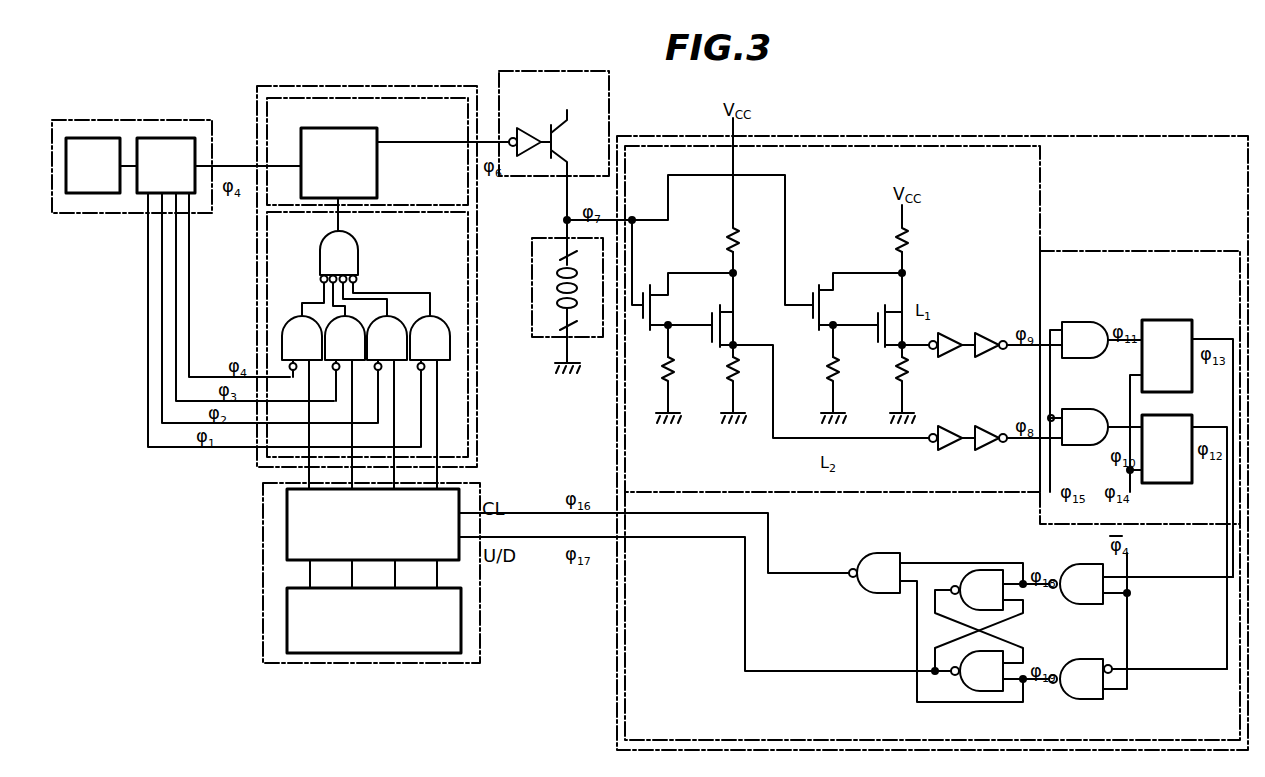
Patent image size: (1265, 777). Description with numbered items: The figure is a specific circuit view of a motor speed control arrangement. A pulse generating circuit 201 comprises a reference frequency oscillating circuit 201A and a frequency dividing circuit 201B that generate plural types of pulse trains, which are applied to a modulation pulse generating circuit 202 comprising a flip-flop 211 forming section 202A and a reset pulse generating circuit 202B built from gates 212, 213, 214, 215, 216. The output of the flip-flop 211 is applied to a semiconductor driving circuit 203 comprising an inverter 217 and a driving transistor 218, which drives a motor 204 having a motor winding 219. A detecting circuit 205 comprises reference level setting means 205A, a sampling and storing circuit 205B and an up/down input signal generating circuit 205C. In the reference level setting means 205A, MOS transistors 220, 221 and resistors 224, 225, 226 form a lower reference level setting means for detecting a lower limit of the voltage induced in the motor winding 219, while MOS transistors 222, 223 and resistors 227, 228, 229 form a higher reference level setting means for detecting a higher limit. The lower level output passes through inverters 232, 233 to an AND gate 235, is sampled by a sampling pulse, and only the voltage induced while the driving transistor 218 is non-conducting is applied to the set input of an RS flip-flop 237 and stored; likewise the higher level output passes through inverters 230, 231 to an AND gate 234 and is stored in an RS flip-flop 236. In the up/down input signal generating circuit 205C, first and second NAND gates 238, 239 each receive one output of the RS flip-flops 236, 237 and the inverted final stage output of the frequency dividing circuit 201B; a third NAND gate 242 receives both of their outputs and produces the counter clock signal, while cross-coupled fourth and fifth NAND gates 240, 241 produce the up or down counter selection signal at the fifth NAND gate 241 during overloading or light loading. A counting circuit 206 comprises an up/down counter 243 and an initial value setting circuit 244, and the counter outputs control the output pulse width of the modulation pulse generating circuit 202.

The pulse generating circuit 201 is at (145, 120).
The reference frequency oscillating circuit 201A is at (82, 146).
The frequency dividing circuit 201B is at (176, 142).
The modulation pulse generating circuit 202 is at (308, 86).
The flip-flop 202A is at (422, 98).
The reset pulse generating circuit 202B is at (470, 258).
The semiconductor driving circuit 203 is at (597, 61).
The motor 204 is at (532, 278).
The detecting circuit 205 is at (910, 134).
The reference level setting means 205A is at (1075, 206).
The sampling and storing circuit 205B is at (1162, 236).
The up/down input signal generating circuit 205C is at (617, 660).
The counting circuit 206 is at (398, 663).
The flip-flop 211 is at (366, 128).
The gate 212 is at (352, 262).
The gate 213 is at (290, 332).
The gate 214 is at (342, 330).
The gate 215 is at (390, 330).
The gate 216 is at (434, 332).
The inverter 217 is at (531, 135).
The driving transistor 218 is at (568, 140).
The motor winding 219 is at (557, 305).
The MOS transistor 220 is at (641, 313).
The MOS transistor 221 is at (708, 330).
The MOS transistor 222 is at (809, 313).
The MOS transistor 223 is at (875, 330).
The resistor 224 is at (742, 240).
The resistor 225 is at (662, 390).
The resistor 226 is at (728, 390).
The resistor 227 is at (908, 242).
The resistor 228 is at (827, 385).
The resistor 229 is at (896, 383).
The inverter 230 is at (946, 334).
The inverter 231 is at (986, 356).
The inverter 232 is at (946, 428).
The inverter 233 is at (988, 449).
The AND gate 234 is at (1080, 322).
The AND gate 235 is at (1080, 409).
The RS flip-flop 236 is at (1170, 320).
The RS flip-flop 237 is at (1162, 483).
The first NAND gate 238 is at (1080, 564).
The second NAND gate 239 is at (1082, 699).
The fourth NAND gate 240 is at (982, 570).
The fifth NAND gate 241 is at (982, 691).
The third NAND gate 242 is at (872, 556).
The up/down counter 243 is at (287, 527).
The initial value setting circuit 244 is at (287, 607).